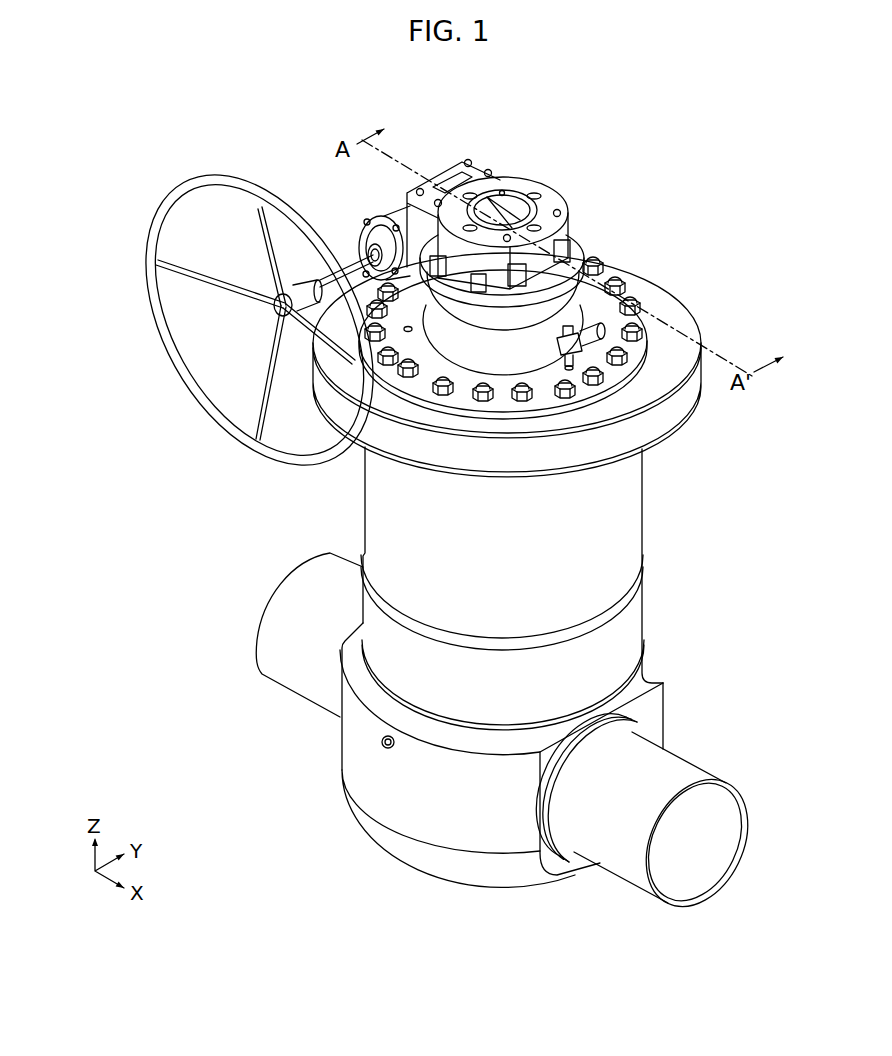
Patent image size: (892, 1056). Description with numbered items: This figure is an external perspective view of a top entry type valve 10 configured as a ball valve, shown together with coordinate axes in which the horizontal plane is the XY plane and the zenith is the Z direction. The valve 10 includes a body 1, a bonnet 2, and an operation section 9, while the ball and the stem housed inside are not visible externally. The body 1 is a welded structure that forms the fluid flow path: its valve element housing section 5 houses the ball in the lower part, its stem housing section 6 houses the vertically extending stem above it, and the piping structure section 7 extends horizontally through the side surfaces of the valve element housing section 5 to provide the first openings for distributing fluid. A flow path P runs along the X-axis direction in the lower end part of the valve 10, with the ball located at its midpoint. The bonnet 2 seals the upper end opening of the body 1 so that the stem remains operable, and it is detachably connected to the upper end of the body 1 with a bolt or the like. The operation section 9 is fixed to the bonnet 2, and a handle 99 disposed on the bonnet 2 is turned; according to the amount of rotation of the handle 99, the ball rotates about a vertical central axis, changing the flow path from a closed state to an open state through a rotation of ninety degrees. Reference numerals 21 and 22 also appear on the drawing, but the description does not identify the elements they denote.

The body 1 is at (744, 470).
The bonnet 2 is at (602, 299).
The valve element housing section 5 is at (707, 613).
The stem housing section 6 is at (707, 355).
The piping structure section 7 is at (706, 777).
The operation section 9 is at (514, 177).
The valve 10 is at (757, 112).
The fitting port 21 is at (605, 323).
The actuator mounting ring 22 is at (588, 305).
The handle 99 is at (183, 196).
The flow path P is at (723, 873).